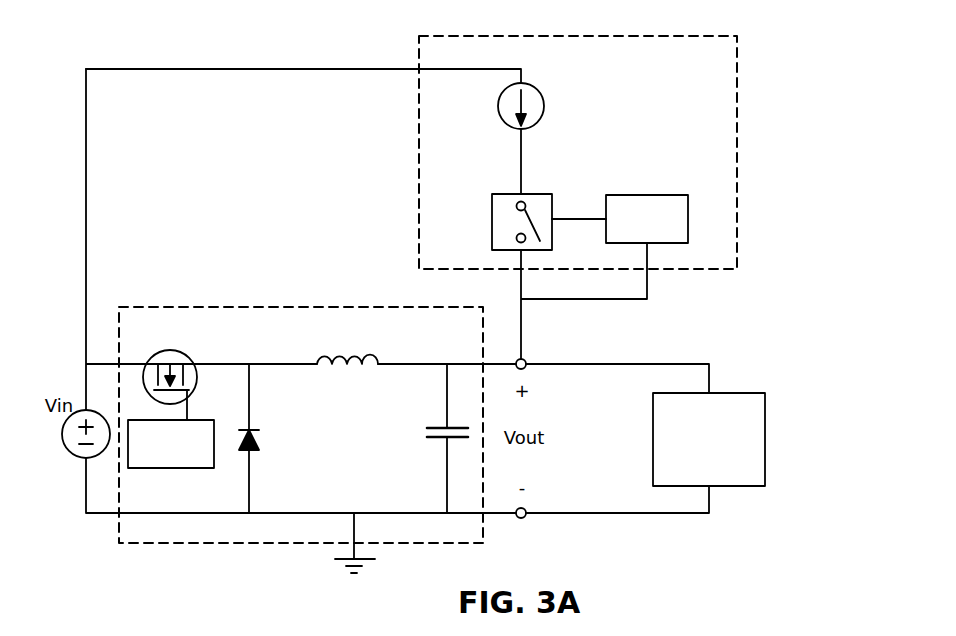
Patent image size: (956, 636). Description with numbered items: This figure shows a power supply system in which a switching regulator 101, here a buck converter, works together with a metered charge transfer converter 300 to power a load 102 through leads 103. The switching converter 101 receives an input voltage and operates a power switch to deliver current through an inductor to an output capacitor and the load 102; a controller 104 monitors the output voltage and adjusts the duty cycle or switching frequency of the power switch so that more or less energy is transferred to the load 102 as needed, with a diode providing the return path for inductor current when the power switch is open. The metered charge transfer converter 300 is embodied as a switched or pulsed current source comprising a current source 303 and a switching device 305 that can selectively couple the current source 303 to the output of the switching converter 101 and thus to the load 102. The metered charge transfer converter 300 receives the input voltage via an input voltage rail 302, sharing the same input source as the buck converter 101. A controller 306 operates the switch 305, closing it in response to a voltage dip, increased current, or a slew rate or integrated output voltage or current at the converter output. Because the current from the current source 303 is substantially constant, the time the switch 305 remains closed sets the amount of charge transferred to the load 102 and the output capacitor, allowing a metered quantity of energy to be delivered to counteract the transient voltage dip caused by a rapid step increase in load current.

The metered charge transfer converter 300 is at (623, 197).
The input voltage rail 302 is at (267, 73).
The current source 303 is at (512, 130).
The switching device 305 is at (533, 194).
The controller 306 is at (642, 195).
The switching converter 101 is at (301, 444).
The controller 104 is at (147, 468).
The leads 103 is at (678, 364).
The load 102 is at (748, 486).